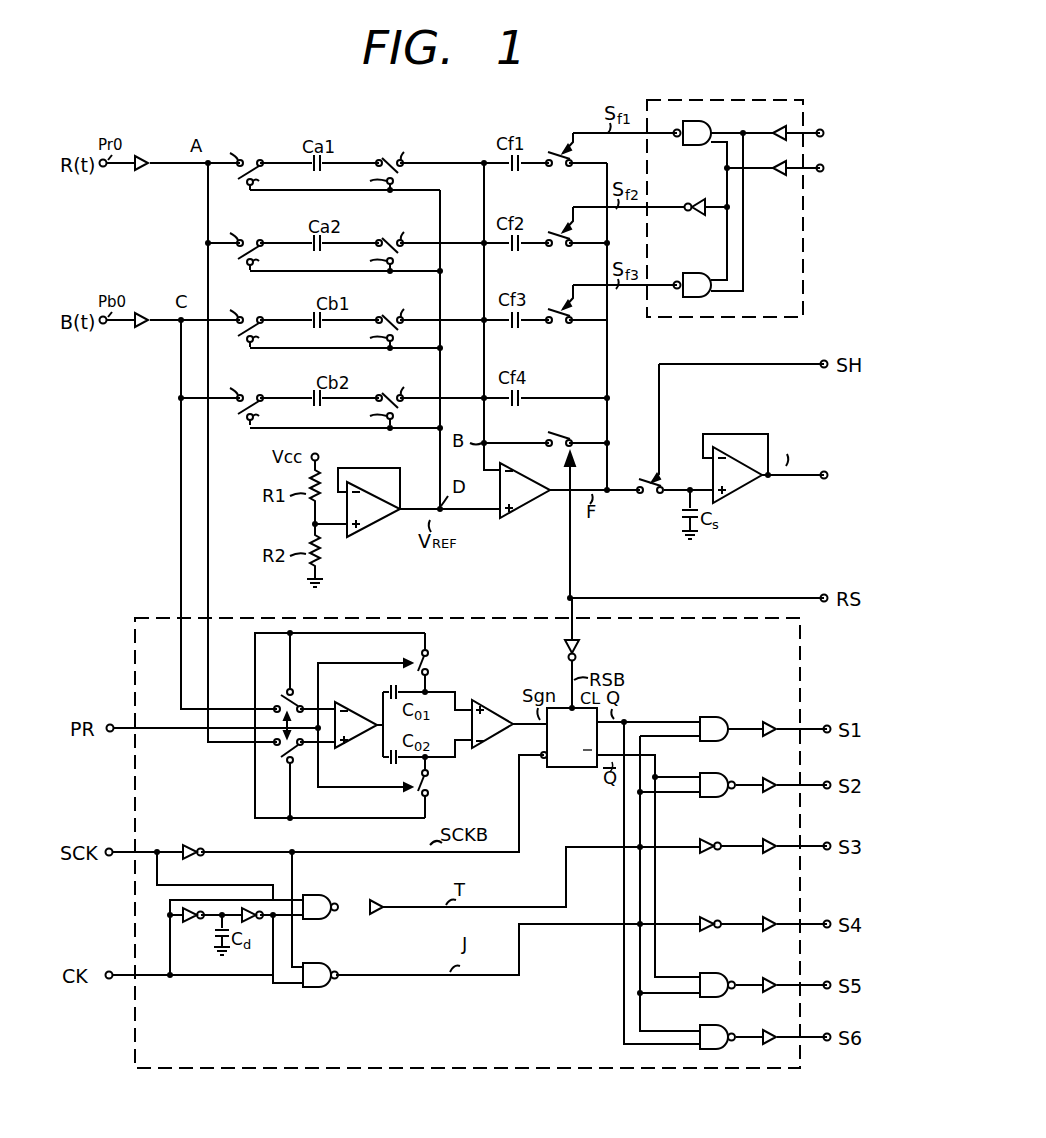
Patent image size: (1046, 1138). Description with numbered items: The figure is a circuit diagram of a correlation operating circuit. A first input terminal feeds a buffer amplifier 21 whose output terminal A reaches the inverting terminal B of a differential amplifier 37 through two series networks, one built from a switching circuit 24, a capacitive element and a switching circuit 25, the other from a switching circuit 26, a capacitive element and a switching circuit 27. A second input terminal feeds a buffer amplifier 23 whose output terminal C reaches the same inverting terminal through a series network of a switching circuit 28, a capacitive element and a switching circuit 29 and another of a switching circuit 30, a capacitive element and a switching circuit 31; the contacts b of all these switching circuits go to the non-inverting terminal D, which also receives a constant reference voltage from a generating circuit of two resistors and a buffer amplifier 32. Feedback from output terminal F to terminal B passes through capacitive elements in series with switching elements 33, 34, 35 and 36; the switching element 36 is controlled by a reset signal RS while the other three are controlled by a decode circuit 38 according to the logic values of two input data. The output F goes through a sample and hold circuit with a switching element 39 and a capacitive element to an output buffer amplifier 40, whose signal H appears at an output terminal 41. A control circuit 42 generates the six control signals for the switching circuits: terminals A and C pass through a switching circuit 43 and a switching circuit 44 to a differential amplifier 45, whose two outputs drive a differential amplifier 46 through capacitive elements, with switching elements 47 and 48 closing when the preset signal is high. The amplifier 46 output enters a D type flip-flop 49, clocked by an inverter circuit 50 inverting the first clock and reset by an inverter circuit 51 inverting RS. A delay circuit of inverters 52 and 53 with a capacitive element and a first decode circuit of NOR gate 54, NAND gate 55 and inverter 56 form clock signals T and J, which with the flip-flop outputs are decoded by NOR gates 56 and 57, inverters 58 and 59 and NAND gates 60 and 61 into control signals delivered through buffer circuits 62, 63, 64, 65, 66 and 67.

The buffer amplifier 21 is at (143, 157).
The buffer amplifier 23 is at (143, 314).
The switching circuit 24 is at (259, 152).
The switching circuit 25 is at (387, 152).
The switching circuit 26 is at (259, 232).
The switching circuit 27 is at (387, 232).
The switching circuit 28 is at (259, 309).
The switching circuit 29 is at (387, 309).
The switching circuit 30 is at (259, 388).
The switching circuit 31 is at (387, 388).
The buffer amplifier 32 is at (376, 532).
The switching element 33 is at (560, 168).
The switching element 34 is at (560, 248).
The switching element 35 is at (560, 325).
The switching element 36 is at (558, 437).
The differential amplifier 37 is at (520, 516).
The decode circuit 38 is at (803, 275).
The switching element 39 is at (652, 497).
The output buffer amplifier 40 is at (748, 483).
The output terminal 41 is at (838, 468).
The control circuit 42 is at (133, 996).
The switching circuit 43 is at (286, 763).
The switching circuit 44 is at (287, 694).
The differential amplifier 45 is at (352, 755).
The differential amplifier 46 is at (493, 706).
The switching element 47 is at (430, 664).
The switching element 48 is at (430, 790).
The D type flip-flop 49 is at (560, 770).
The inverter circuit 50 is at (184, 849).
The inverter circuit 51 is at (576, 655).
The inverter 52 is at (190, 923).
The inverter 53 is at (250, 924).
The NOR gate 54 is at (316, 896).
The NAND gate 55 is at (316, 965).
The inverter and NOR gate 56 is at (375, 901).
The NOR gate 57 is at (712, 774).
The inverter 58 is at (710, 838).
The inverter 59 is at (706, 916).
The NAND gate 60 is at (714, 973).
The NAND gate 61 is at (716, 1025).
The buffer circuit 62 is at (767, 720).
The buffer circuit 63 is at (767, 776).
The buffer circuit 64 is at (767, 838).
The buffer circuit 65 is at (767, 915).
The buffer circuit 66 is at (767, 976).
The buffer circuit 67 is at (767, 1028).